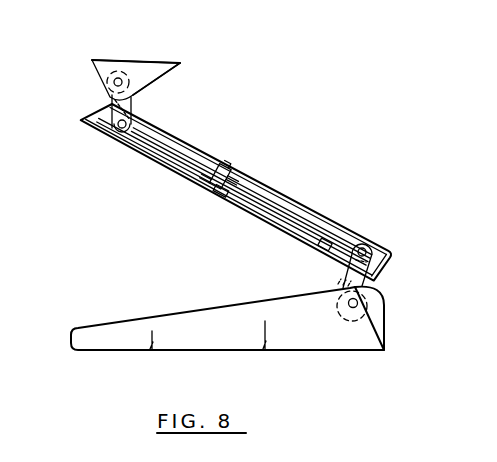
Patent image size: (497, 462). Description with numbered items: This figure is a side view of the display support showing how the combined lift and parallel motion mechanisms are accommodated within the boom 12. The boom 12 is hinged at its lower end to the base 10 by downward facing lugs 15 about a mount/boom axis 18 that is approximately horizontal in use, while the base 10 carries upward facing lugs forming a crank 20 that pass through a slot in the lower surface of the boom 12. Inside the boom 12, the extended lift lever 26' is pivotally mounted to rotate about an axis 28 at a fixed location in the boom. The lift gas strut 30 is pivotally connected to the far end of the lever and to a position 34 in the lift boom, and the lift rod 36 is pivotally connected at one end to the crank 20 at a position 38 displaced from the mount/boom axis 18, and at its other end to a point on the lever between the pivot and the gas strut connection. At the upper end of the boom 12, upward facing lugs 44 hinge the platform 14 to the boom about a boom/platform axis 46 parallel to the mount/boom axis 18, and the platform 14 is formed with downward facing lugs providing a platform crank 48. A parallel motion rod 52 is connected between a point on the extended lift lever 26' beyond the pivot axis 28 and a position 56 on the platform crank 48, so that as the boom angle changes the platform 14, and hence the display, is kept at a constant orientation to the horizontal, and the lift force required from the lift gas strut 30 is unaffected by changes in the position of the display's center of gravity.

The base 10 is at (160, 315).
The boom 12 is at (236, 187).
The platform 14 is at (157, 82).
The downward facing lugs 15 is at (337, 268).
The mount/boom axis 18 is at (385, 303).
The crank 20 is at (382, 287).
The extended lift lever 26' is at (253, 161).
The axis 28 is at (222, 190).
The lift gas strut 30 is at (272, 195).
The position 34 is at (318, 245).
The lift rod 36 is at (272, 222).
The position 38 is at (364, 248).
The upward facing lugs 44 is at (97, 83).
The boom/platform axis 46 is at (122, 77).
The platform crank 48 is at (117, 108).
The parallel motion rod 52 is at (172, 154).
The position 56 is at (116, 130).